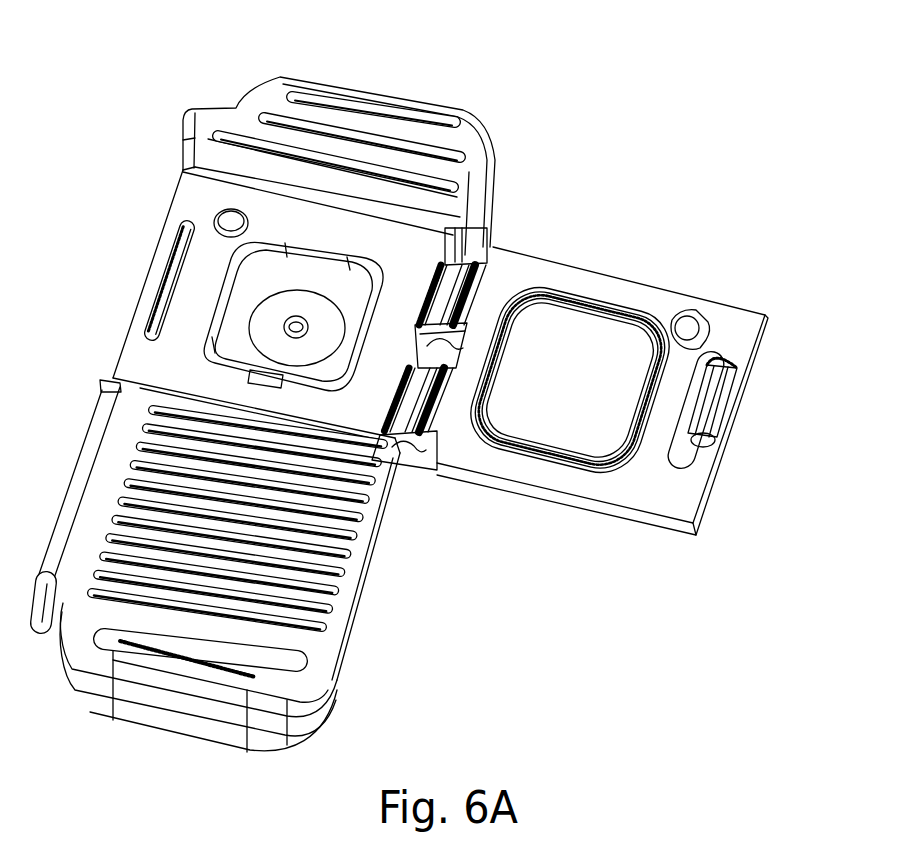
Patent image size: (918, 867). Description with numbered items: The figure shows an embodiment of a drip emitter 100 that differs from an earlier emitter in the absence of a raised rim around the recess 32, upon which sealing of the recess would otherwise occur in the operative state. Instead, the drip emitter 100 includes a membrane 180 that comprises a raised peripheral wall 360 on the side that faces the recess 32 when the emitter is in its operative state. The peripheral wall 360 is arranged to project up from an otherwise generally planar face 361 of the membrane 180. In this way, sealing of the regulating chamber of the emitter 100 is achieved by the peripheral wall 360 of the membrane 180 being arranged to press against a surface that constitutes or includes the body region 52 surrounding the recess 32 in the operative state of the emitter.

The drip emitter 100 is at (402, 378).
The body region 52 is at (387, 235).
The recess 32 is at (348, 290).
The membrane 180 is at (602, 397).
The raised peripheral wall 360 is at (563, 443).
The generally planar face 361 is at (533, 428).